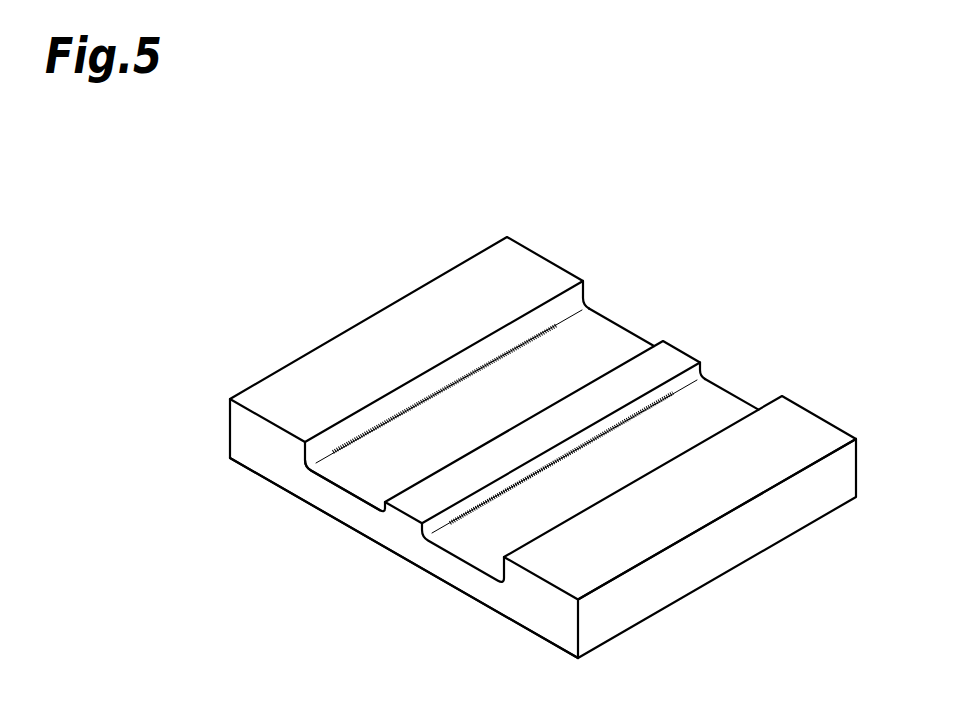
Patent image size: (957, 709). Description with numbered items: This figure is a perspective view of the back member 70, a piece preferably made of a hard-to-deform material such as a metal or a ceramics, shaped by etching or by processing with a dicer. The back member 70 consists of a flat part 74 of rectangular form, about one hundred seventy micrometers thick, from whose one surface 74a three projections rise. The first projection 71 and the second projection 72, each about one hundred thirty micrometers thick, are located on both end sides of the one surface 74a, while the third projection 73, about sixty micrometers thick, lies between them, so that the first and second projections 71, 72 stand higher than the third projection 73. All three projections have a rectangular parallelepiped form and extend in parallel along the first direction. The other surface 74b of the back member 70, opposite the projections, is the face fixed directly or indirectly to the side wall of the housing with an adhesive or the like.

The back member 70 is at (800, 188).
The first projection 71 is at (533, 272).
The second projection 72 is at (805, 432).
The third projection 73 is at (668, 362).
The flat part 74 is at (458, 575).
The one surface 74a is at (600, 340).
The other surface 74b is at (337, 502).